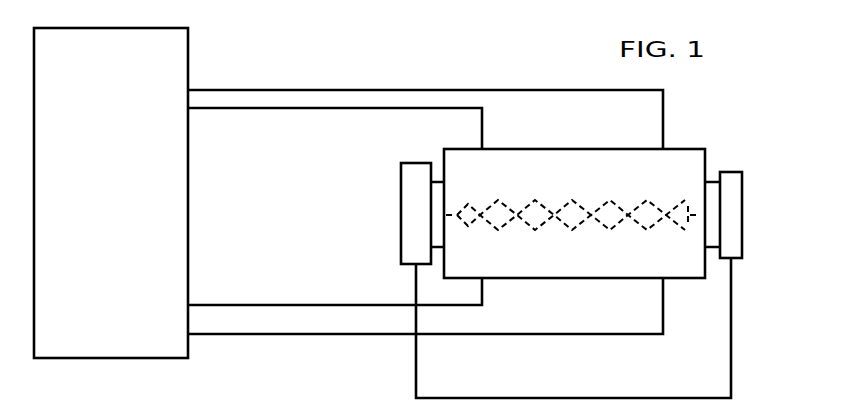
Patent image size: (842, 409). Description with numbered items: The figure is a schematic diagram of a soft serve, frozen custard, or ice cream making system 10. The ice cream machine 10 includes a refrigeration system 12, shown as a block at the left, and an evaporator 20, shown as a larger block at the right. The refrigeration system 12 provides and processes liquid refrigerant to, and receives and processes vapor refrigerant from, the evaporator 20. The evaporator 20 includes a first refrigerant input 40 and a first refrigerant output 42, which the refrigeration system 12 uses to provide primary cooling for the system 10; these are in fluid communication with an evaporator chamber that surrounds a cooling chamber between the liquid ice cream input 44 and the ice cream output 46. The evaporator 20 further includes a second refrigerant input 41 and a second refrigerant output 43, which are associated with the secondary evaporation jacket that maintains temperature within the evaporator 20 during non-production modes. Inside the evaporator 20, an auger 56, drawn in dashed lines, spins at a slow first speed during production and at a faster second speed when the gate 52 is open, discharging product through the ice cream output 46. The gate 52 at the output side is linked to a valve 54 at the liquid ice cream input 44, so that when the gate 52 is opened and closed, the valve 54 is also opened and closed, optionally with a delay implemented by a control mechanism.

The ice cream making system 10 is at (298, 30).
The refrigeration system 12 is at (188, 55).
The evaporator 20 is at (548, 148).
The first refrigerant input 40 is at (485, 280).
The second refrigerant input 41 is at (666, 281).
The first refrigerant output 42 is at (484, 148).
The second refrigerant output 43 is at (666, 146).
The liquid ice cream input 44 is at (437, 179).
The ice cream output 46 is at (713, 180).
The gate 52 is at (742, 212).
The valve 54 is at (402, 212).
The auger 56 is at (582, 196).